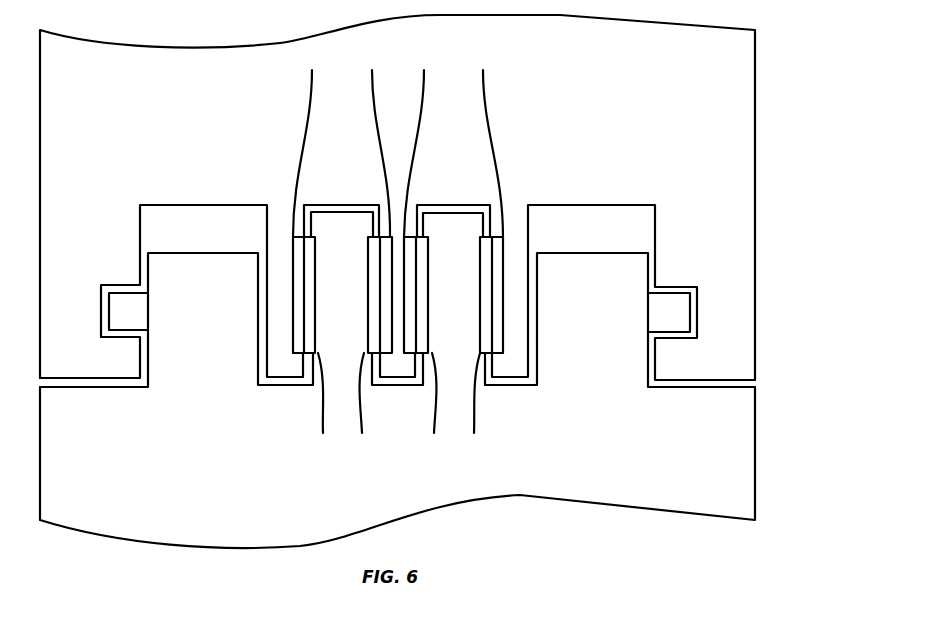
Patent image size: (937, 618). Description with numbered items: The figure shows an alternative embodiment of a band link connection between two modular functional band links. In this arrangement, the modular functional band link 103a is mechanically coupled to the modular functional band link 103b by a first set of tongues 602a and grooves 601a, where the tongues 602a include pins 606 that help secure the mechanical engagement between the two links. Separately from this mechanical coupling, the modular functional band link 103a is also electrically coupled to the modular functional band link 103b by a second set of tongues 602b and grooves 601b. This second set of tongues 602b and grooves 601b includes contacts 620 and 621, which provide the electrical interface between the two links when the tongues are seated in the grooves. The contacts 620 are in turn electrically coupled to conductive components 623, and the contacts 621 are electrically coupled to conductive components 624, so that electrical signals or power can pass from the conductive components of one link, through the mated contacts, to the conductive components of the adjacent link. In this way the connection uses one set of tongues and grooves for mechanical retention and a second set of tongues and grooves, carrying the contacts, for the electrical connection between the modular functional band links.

The modular functional band link 103a is at (757, 275).
The modular functional band link 103b is at (757, 430).
The grooves 601a is at (200, 205).
The grooves 601b is at (313, 205).
The tongues 602a is at (194, 253).
The tongues 602b is at (360, 212).
The pins 606 is at (117, 293).
The contacts 620 is at (367, 318).
The contacts 621 is at (293, 297).
The conductive components 623 is at (307, 91).
The conductive components 624 is at (318, 417).